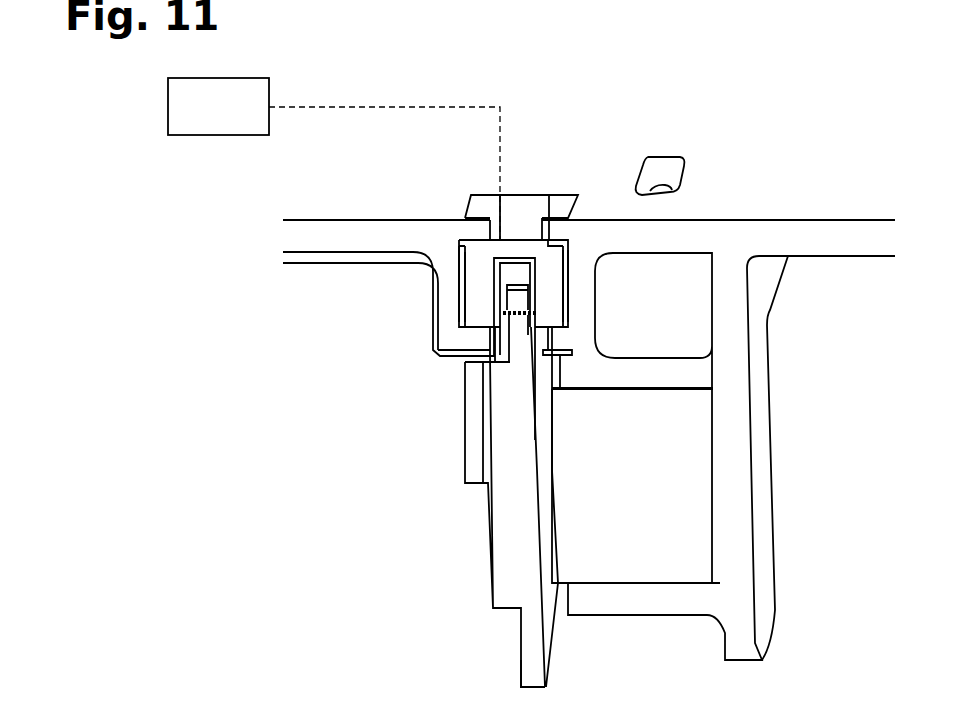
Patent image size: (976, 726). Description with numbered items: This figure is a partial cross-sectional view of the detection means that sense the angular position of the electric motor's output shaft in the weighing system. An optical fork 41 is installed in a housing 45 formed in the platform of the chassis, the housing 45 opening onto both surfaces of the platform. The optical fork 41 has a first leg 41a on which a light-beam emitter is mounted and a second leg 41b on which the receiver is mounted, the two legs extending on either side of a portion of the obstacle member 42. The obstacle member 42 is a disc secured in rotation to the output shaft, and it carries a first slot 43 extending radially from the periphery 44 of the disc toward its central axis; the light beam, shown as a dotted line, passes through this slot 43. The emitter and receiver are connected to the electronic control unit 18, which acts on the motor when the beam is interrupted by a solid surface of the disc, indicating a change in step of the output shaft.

The electronic control unit 18 is at (226, 119).
The optical fork 41 is at (524, 240).
The first leg 41a is at (477, 298).
The second leg 41b is at (553, 291).
The obstacle member 42 is at (520, 592).
The first slot 43 is at (519, 318).
The periphery 44 is at (533, 688).
The housing 45 is at (488, 196).